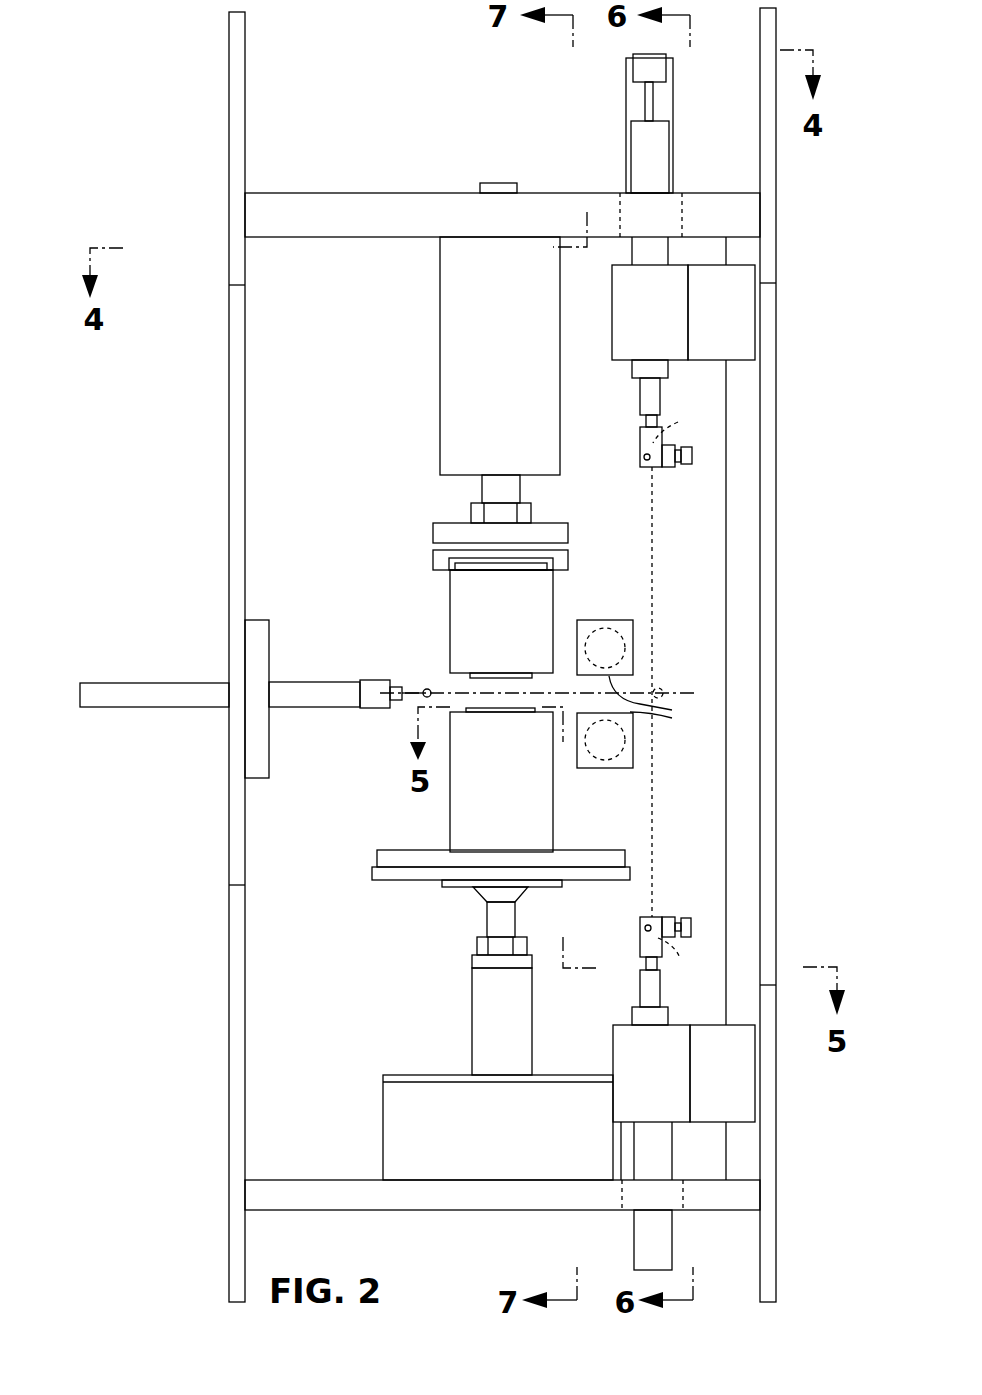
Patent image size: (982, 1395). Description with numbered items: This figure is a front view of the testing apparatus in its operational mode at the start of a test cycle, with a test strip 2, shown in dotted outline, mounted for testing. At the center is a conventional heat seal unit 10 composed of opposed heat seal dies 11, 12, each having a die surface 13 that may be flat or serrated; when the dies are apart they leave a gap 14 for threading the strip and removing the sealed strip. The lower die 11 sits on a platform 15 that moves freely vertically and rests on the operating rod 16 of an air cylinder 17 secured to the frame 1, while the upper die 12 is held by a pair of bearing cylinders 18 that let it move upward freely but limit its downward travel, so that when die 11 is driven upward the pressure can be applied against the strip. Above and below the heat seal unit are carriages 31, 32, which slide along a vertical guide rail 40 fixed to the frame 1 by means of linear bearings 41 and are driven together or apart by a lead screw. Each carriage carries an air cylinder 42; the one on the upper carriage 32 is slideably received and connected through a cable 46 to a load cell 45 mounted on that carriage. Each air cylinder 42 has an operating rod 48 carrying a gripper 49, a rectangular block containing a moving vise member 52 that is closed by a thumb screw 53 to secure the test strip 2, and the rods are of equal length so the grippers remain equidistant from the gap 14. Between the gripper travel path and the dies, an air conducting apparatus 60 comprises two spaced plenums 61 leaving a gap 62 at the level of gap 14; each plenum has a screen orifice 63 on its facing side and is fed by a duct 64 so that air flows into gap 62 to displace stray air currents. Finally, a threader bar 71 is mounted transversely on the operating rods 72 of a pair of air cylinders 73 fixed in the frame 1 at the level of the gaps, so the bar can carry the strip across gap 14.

The frame 1 is at (375, 193).
The test strip 2 is at (650, 513).
The heat seal unit 10 is at (380, 824).
The heat seal die 11 is at (458, 815).
The heat seal die 12 is at (450, 592).
The die surface 13 is at (470, 675).
The gap 14 is at (450, 692).
The platform 15 is at (372, 868).
The operating rod 16 is at (487, 920).
The air cylinder 17 is at (395, 1122).
The bearing cylinder 18 is at (440, 363).
The carriage 31 is at (651, 1073).
The carriage 32 is at (650, 312).
The vertical guide rail 40 is at (735, 803).
The linear bearing 41 is at (721, 693).
The air cylinder 42 is at (655, 160).
The load cell 45 is at (633, 68).
The cable 46 is at (645, 103).
The operating rod 48 is at (645, 422).
The gripper 49 is at (640, 450).
The vise member 52 is at (660, 465).
The thumb screw 53 is at (692, 455).
The air conducting apparatus 60 is at (635, 702).
The plenum 61 is at (587, 625).
The gap 62 is at (642, 678).
The orifice 63 is at (671, 714).
The duct 64 is at (613, 630).
The threader bar 71 is at (415, 703).
The operating rod 72 is at (385, 715).
The air cylinder 73 is at (183, 685).